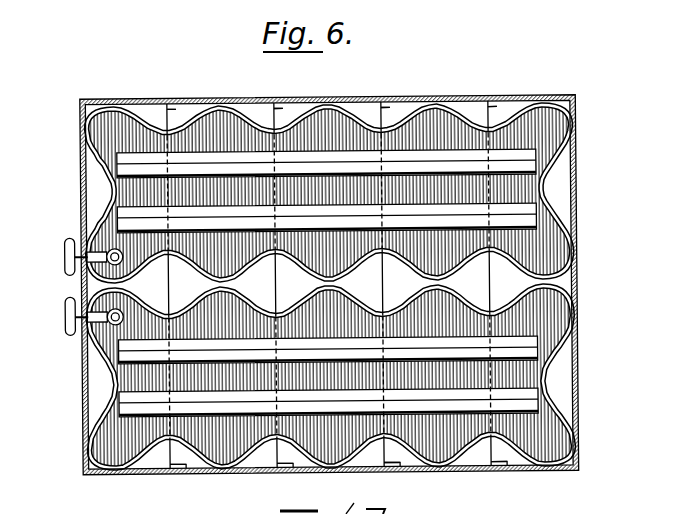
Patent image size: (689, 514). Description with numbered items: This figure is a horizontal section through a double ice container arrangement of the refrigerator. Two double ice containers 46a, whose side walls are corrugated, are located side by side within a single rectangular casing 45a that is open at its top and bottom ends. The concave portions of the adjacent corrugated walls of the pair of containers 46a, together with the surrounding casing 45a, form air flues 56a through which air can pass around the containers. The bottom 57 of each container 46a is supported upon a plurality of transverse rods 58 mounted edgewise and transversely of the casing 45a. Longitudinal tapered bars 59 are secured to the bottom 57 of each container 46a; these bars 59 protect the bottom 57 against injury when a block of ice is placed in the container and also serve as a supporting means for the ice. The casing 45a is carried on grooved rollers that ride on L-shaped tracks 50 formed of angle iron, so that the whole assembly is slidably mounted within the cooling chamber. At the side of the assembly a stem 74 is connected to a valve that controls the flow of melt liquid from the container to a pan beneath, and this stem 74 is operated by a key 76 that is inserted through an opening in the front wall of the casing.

The L-shaped tracks 50 is at (558, 378).
The double ice containers 46a is at (542, 428).
The single casing 45a is at (577, 190).
The air flues 56a is at (503, 291).
The longitudinal tapered bars 59 is at (318, 399).
The transverse rods 58 is at (110, 381).
The bottom 57 is at (233, 447).
The key 76 is at (68, 322).
The stem 74 is at (127, 313).